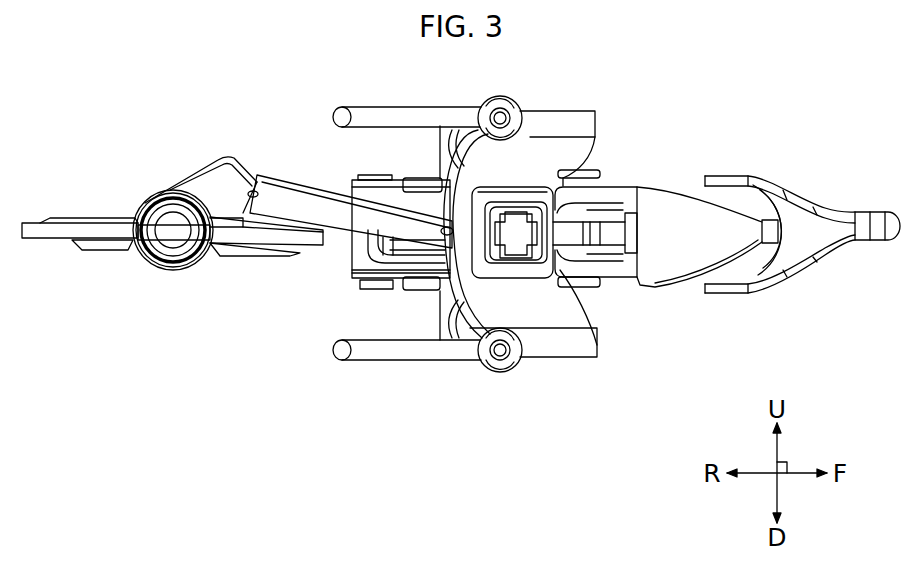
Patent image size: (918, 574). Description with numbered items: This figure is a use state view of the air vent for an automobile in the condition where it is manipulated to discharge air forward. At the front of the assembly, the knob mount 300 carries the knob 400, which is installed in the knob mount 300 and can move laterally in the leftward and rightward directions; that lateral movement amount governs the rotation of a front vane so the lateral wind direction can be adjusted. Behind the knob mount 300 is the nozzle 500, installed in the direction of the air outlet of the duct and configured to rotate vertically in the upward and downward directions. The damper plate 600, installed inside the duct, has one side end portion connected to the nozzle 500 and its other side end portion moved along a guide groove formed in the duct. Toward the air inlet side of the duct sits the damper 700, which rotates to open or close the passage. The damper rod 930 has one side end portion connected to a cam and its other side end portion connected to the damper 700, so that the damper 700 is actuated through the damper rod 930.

The knob mount 300 is at (680, 242).
The knob 400 is at (805, 233).
The nozzle 500 is at (570, 147).
The damper plate 600 is at (394, 349).
The damper 700 is at (72, 213).
The damper rod 930 is at (288, 197).